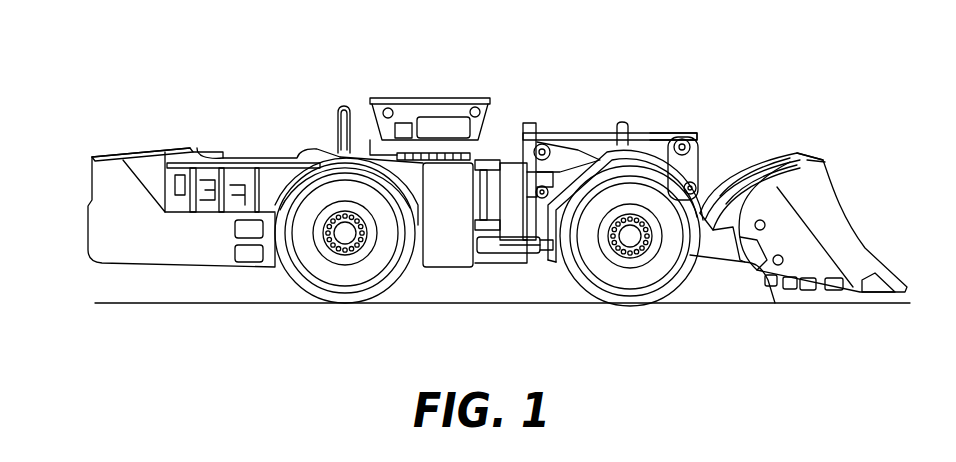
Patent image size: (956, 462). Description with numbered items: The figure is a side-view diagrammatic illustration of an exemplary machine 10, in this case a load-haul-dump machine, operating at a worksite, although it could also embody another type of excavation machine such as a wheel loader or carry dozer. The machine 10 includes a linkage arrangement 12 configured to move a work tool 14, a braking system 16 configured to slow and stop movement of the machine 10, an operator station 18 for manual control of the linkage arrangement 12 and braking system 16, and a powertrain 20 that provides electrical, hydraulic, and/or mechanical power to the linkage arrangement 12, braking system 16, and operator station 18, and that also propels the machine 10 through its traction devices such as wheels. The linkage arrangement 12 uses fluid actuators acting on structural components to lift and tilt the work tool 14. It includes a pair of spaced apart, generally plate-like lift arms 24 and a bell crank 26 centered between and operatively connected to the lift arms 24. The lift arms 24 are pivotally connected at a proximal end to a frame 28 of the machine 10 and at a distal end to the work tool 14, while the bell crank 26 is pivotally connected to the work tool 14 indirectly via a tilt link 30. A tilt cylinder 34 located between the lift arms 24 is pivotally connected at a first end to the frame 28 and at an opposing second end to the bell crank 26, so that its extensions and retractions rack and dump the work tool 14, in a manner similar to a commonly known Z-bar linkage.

The machine 10 is at (78, 85).
The linkage arrangement 12 is at (882, 84).
The work tool 14 is at (795, 241).
The braking system 16 is at (383, 218).
The operator station 18 is at (428, 122).
The powertrain 20 is at (193, 148).
The lift arms 24 is at (727, 280).
The bell crank 26 is at (707, 150).
The frame 28 is at (510, 225).
The tilt link 30 is at (764, 160).
The tilt cylinder 34 is at (662, 129).